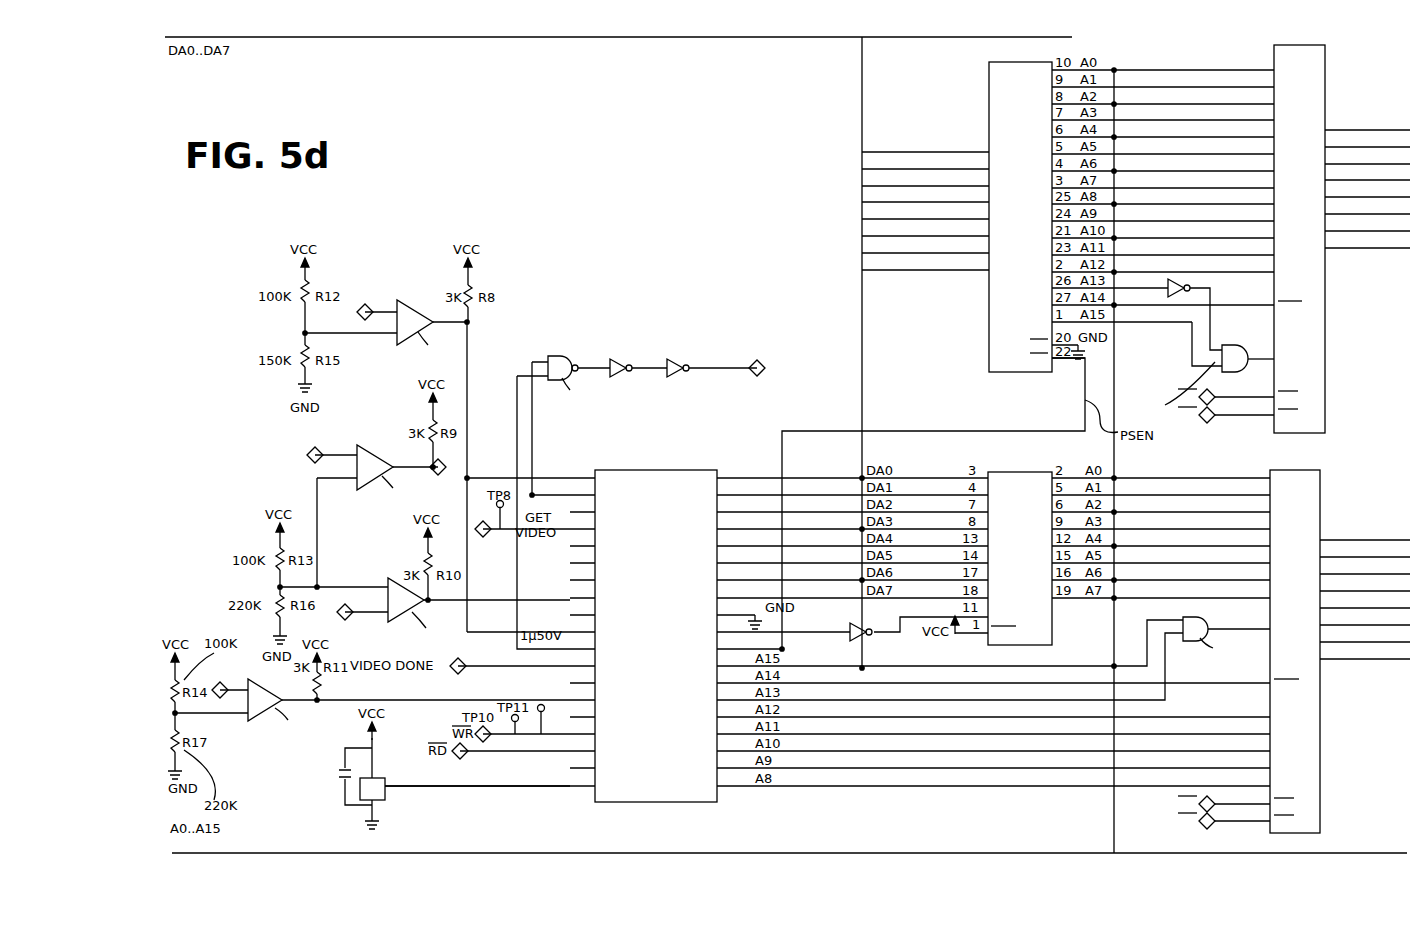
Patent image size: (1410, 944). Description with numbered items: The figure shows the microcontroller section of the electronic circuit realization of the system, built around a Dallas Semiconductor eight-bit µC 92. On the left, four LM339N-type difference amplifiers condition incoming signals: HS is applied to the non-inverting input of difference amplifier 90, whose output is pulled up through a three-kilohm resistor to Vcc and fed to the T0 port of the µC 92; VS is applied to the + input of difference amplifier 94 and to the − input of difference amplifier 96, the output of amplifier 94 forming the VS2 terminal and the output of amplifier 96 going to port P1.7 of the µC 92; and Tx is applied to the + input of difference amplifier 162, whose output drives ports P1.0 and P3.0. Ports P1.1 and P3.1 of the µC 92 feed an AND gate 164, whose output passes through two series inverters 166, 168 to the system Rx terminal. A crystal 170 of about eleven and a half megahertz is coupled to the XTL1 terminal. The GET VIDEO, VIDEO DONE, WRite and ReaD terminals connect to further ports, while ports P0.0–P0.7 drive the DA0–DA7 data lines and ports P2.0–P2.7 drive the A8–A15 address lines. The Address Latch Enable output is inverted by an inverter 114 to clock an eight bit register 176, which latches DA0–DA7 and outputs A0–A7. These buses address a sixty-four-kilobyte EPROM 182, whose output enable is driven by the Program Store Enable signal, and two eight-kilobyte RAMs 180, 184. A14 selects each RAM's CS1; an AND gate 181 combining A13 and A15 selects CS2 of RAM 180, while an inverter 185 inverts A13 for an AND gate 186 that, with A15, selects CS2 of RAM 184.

The µC 92 is at (681, 456).
The difference amplifier 162 is at (425, 306).
The AND gate 164 is at (563, 357).
The inverter 166 is at (625, 358).
The inverter 168 is at (682, 358).
The difference amplifier 94 is at (372, 447).
The difference amplifier 96 is at (397, 578).
The difference amplifier 90 is at (258, 720).
The eight bit register 176 is at (988, 472).
The EPROM 182 is at (989, 110).
The RAM 184 is at (1325, 75).
The RAM 180 is at (1320, 488).
The inverter 185 is at (1175, 300).
The AND gate 186 is at (1232, 347).
The AND gate 181 is at (1194, 642).
The inverter U28 114 is at (876, 638).
The crystal 170 is at (388, 778).